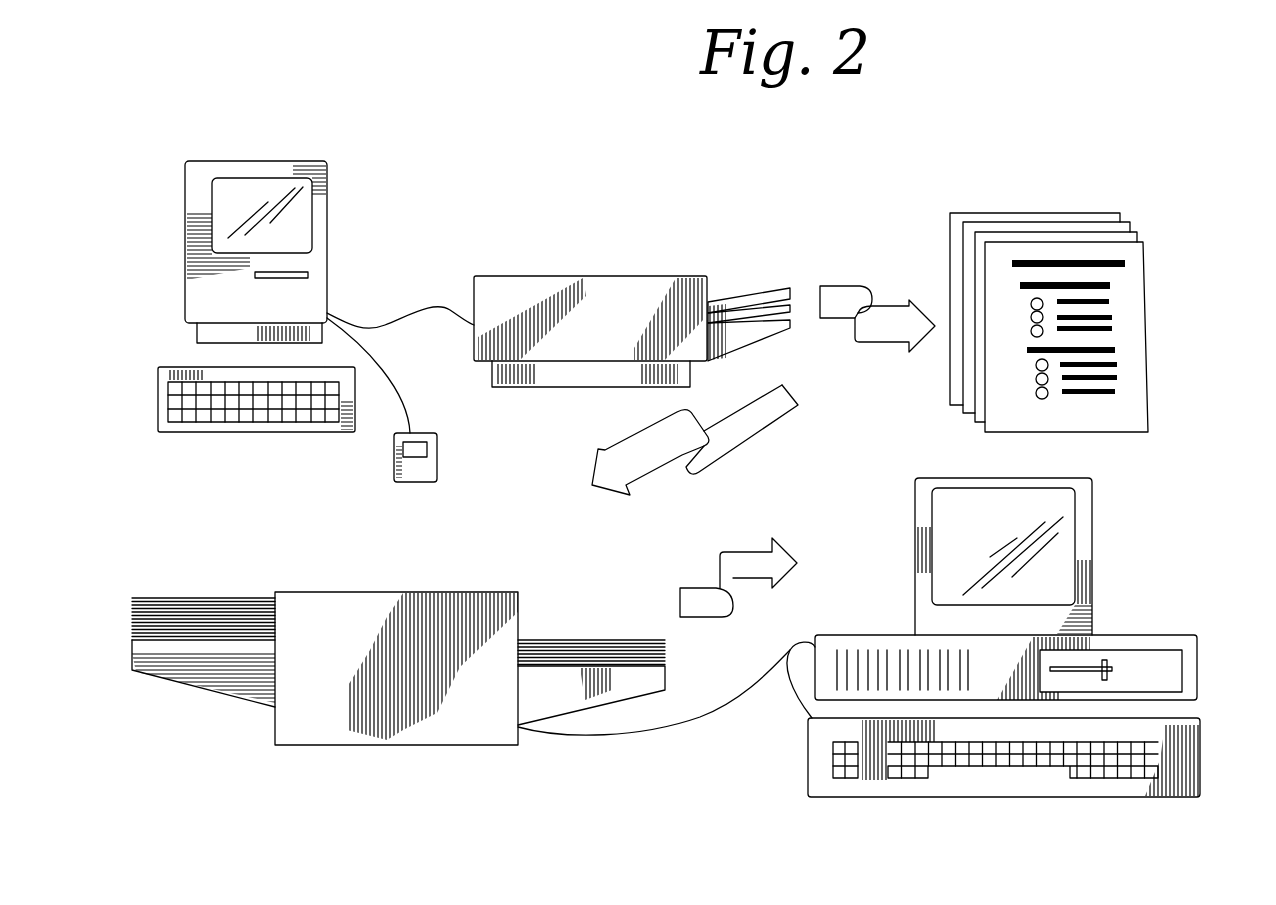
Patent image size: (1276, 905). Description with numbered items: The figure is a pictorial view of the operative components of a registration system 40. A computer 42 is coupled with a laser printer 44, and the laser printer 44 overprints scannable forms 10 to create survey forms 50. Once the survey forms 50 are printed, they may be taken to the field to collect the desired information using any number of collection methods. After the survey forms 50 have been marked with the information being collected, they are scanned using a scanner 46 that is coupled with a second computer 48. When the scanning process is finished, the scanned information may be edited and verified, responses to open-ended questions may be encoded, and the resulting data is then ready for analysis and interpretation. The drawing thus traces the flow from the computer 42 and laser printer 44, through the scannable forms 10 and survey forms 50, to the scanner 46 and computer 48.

The scannable forms 10 is at (768, 289).
The registration system 40 is at (1063, 147).
The computer 42 is at (327, 205).
The laser printer 44 is at (642, 276).
The scanner 46 is at (315, 592).
The computer 48 is at (1092, 548).
The survey forms 50 is at (1147, 295).